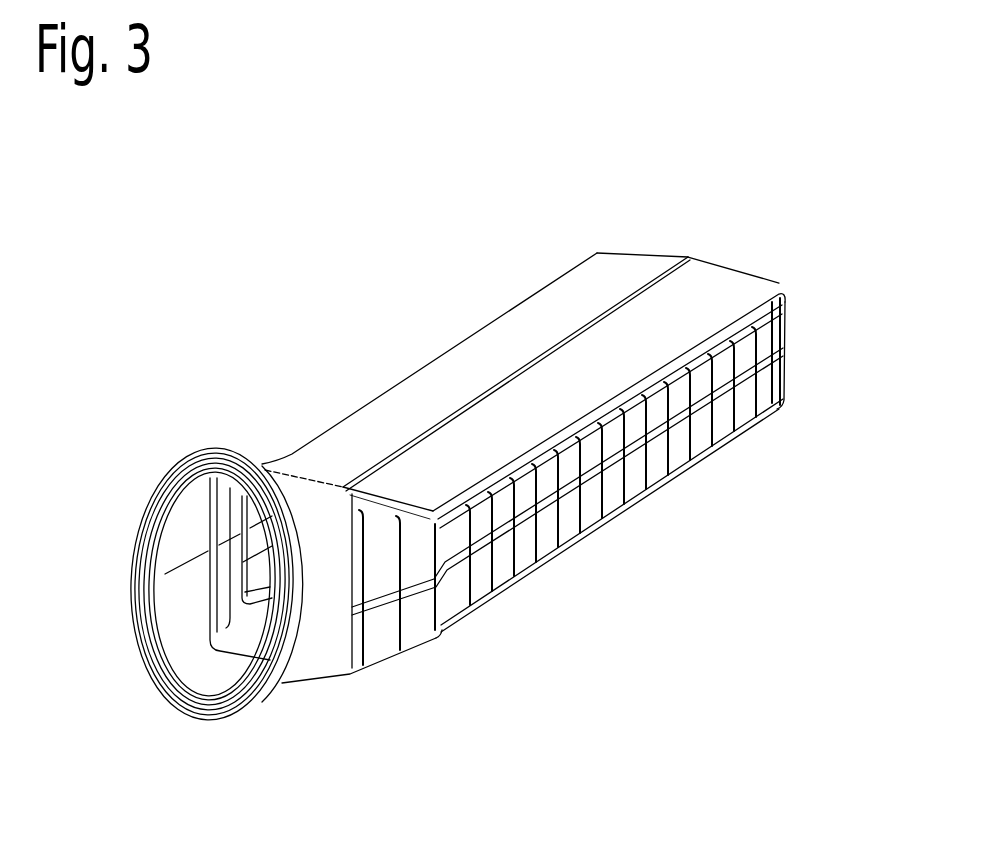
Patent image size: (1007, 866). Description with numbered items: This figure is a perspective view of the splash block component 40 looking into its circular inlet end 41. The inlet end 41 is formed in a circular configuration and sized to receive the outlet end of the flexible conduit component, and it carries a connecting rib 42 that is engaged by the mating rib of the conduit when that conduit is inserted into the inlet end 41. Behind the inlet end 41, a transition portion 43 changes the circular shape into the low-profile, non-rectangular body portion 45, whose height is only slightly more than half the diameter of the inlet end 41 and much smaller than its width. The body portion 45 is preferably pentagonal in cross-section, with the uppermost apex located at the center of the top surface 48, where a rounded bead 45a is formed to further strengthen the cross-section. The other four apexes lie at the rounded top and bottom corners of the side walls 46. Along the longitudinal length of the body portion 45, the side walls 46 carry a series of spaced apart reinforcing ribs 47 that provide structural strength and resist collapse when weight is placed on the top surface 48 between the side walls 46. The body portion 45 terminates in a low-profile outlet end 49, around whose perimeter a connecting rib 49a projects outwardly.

The splash block component 40 is at (557, 155).
The inlet end 41 is at (198, 720).
The connecting rib 42 is at (273, 663).
The transition portion 43 is at (303, 557).
The body portion 45 is at (450, 353).
The rounded bead 45a is at (417, 437).
The side walls 46 is at (588, 505).
The reinforcing ribs 47 is at (558, 504).
The top surface 48 is at (557, 313).
The outlet end 49 is at (657, 250).
The connecting rib 49a is at (773, 327).